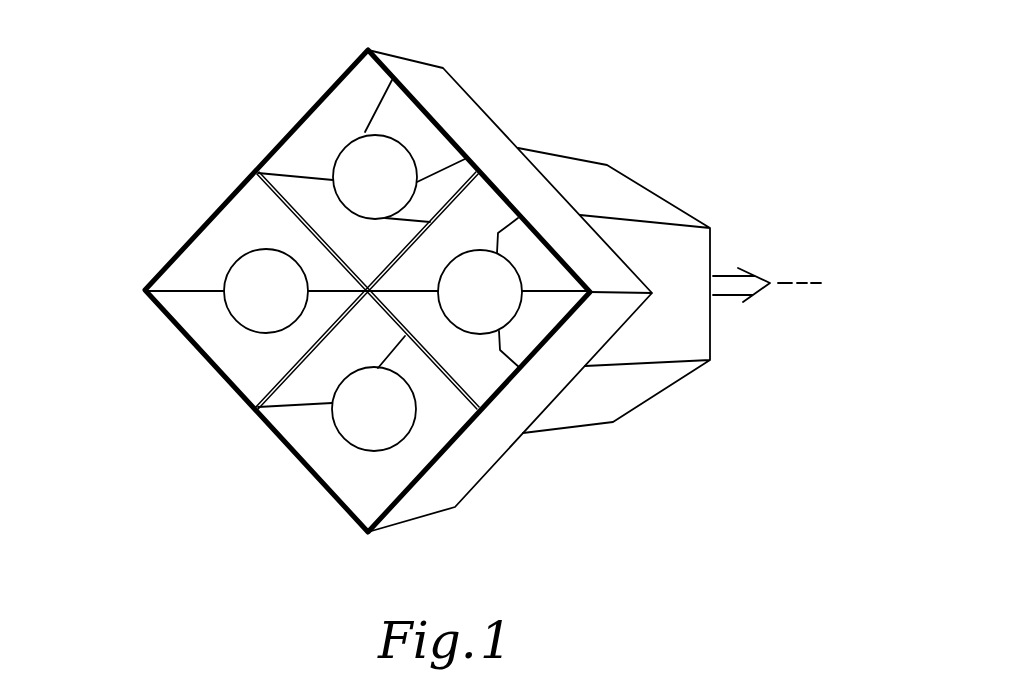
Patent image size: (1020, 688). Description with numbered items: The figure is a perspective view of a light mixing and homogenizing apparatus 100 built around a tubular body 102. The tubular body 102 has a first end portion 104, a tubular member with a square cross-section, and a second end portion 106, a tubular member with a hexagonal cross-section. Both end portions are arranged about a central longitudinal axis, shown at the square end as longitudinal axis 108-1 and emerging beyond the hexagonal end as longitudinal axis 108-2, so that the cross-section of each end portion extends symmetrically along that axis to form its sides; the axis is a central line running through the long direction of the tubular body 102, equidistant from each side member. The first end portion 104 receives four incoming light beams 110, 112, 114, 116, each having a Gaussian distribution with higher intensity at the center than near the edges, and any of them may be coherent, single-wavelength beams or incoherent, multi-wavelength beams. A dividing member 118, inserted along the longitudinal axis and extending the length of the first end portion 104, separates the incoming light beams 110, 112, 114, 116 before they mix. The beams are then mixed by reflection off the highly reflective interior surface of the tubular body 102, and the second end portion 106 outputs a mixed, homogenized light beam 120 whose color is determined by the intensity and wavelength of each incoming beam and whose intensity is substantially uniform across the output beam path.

The light mixing and homogenizing apparatus 100 is at (150, 104).
The tubular body 102 is at (603, 142).
The first end portion 104 is at (417, 78).
The second end portion 106 is at (668, 212).
The longitudinal axis 108-1 is at (327, 288).
The longitudinal axis 108-2 is at (800, 286).
The incoming light beam 110 is at (357, 160).
The incoming light beam 112 is at (485, 322).
The incoming light beam 114 is at (362, 417).
The incoming light beam 116 is at (248, 300).
The dividing member 118 is at (305, 198).
The mixed, homogenized light beam 120 is at (748, 270).